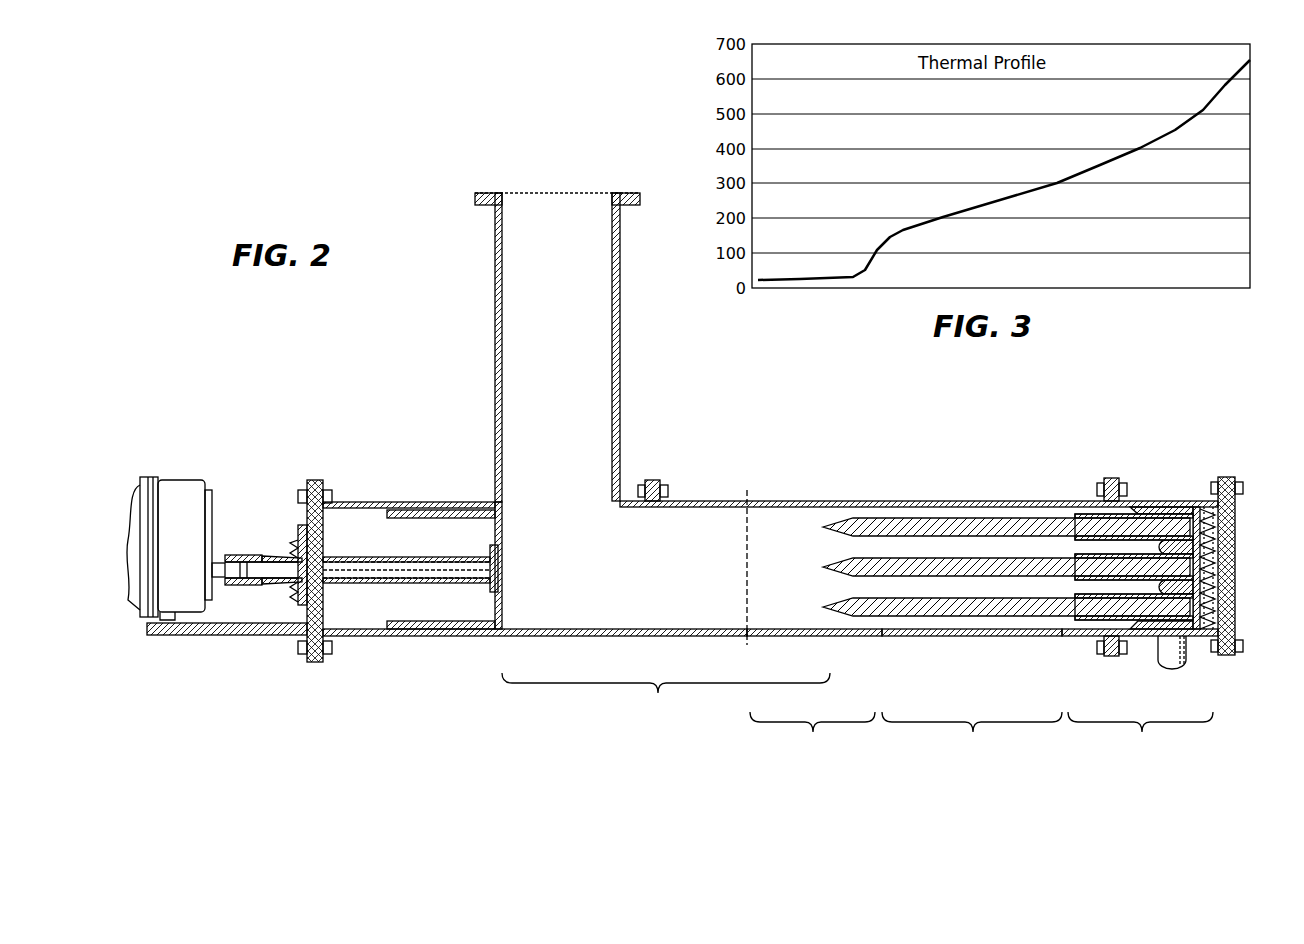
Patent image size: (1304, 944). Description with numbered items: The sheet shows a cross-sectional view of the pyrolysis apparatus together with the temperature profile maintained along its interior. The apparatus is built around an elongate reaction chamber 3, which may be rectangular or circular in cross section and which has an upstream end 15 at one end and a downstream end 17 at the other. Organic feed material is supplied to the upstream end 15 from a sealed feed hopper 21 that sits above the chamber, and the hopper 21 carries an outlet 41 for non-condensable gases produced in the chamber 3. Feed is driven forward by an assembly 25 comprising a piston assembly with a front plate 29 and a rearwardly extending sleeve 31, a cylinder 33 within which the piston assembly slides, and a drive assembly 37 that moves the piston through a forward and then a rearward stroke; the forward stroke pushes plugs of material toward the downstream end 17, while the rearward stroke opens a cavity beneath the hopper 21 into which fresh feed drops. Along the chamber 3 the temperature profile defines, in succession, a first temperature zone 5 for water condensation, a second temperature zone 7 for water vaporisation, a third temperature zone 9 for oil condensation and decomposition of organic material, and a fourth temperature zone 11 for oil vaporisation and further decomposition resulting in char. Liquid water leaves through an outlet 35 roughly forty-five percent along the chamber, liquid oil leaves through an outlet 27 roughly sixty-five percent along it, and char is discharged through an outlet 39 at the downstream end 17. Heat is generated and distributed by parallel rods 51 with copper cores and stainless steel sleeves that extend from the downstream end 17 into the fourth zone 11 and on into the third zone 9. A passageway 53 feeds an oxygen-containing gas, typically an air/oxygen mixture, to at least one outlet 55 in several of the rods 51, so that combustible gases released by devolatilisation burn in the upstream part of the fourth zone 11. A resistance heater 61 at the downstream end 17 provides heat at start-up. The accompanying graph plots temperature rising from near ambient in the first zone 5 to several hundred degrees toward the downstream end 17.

The reaction chamber 3 is at (802, 498).
The first temperature zone 5 is at (572, 688).
The second temperature zone 7 is at (768, 728).
The third temperature zone 9 is at (1022, 724).
The fourth temperature zone 11 is at (1185, 727).
The upstream end 15 is at (545, 607).
The downstream end 17 is at (1160, 462).
The feed hopper 21 is at (546, 220).
The assembly for forcing feed material forwardly 25 is at (283, 667).
The outlet for liquid oil product 27 is at (943, 637).
The front plate 29 is at (502, 528).
The rearwardly extending sleeve 31 is at (420, 518).
The cylinder 33 is at (375, 503).
The outlet for liquid water product 35 is at (826, 637).
The drive assembly 37 is at (205, 460).
The outlet for char 39 is at (1187, 662).
The outlet for non-condensable gases 41 is at (495, 400).
The rods 51 is at (1000, 566).
The passageway 53 is at (1128, 508).
The outlet 55 is at (1083, 517).
The resistance heater 61 is at (1222, 568).